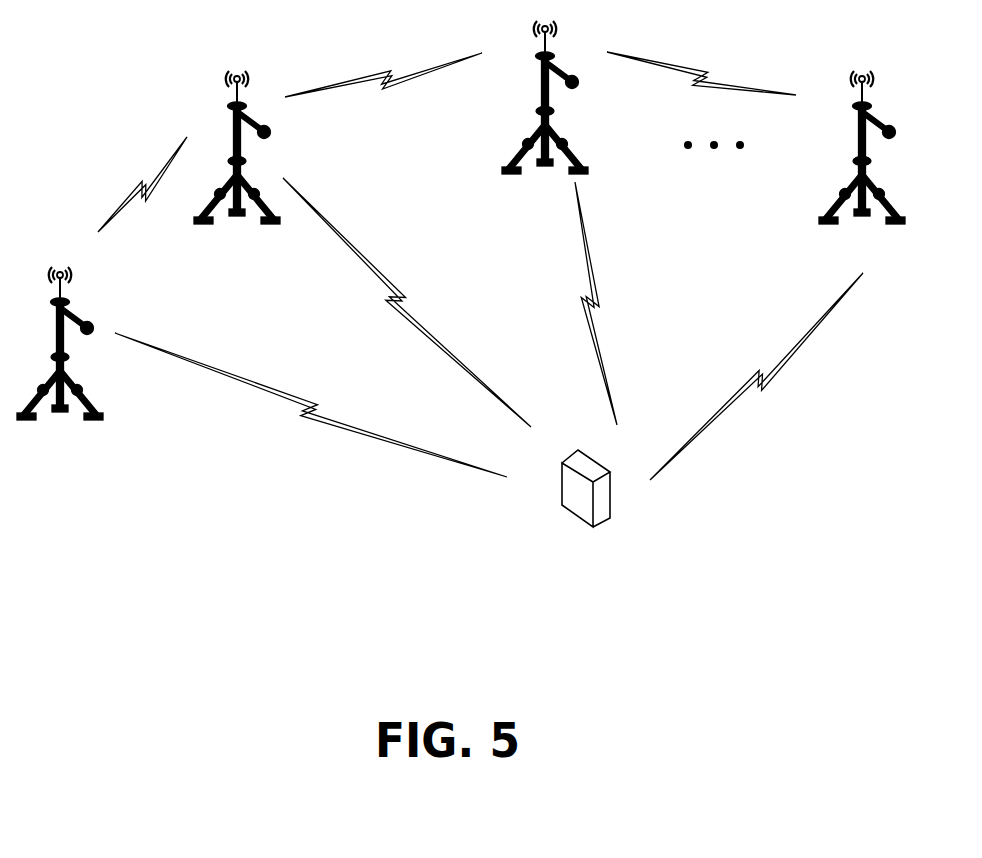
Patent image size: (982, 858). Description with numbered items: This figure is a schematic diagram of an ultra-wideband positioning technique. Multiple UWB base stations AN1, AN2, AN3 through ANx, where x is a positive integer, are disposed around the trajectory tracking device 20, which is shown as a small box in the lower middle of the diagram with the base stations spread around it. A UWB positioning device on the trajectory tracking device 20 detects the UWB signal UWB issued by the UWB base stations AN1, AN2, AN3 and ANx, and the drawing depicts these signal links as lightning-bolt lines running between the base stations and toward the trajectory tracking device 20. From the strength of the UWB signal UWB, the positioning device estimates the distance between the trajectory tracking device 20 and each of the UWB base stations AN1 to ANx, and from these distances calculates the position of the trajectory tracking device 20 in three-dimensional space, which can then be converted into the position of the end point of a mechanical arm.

The trajectory tracking device 20 is at (599, 523).
The UWB base station AN1 is at (60, 367).
The UWB base station AN2 is at (237, 169).
The UWB base station AN3 is at (545, 121).
The UWB base station ANx is at (862, 172).
The UWB signal UWB is at (136, 181).